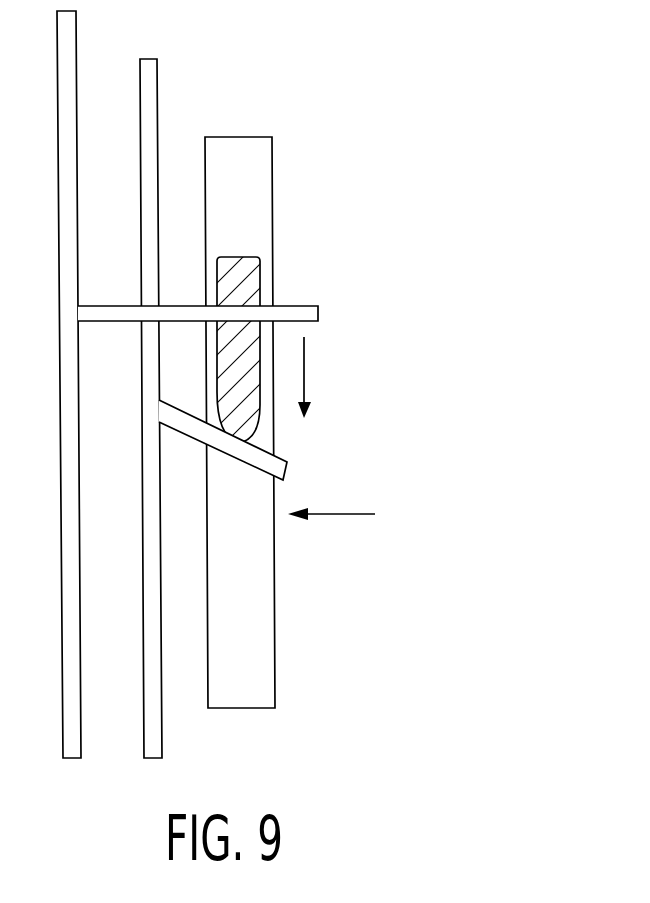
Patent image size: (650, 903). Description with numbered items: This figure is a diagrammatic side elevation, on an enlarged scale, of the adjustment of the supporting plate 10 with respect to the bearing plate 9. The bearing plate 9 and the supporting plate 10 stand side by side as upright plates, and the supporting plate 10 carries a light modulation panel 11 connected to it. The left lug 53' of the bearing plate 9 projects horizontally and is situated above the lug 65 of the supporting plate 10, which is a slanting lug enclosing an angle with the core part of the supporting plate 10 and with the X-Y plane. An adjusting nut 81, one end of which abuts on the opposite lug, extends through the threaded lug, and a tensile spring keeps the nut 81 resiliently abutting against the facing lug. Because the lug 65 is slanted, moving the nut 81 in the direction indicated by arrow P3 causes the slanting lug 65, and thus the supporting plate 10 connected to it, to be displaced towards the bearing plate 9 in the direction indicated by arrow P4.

The bearing plate 9 is at (67, 25).
The supporting plate 10 is at (152, 86).
The light modulation panel 11 is at (260, 170).
The adjusting nut 81 is at (240, 272).
The left lug 53' is at (227, 314).
The lug 65 is at (292, 470).
The arrow P3 is at (305, 367).
The arrow P4 is at (333, 515).